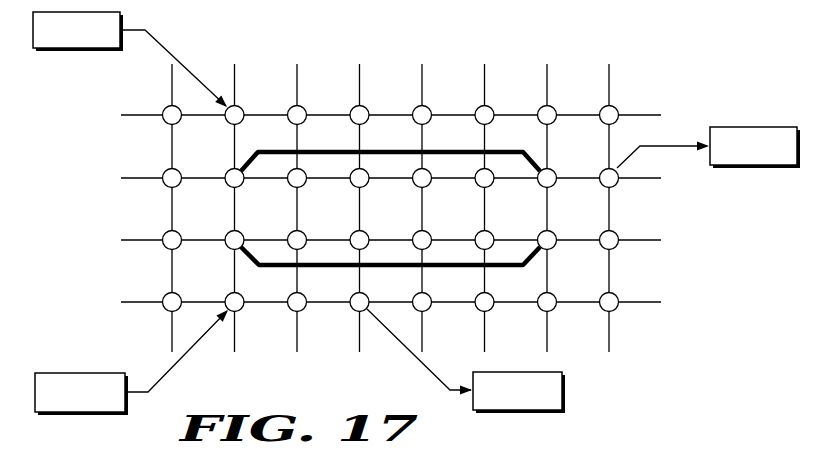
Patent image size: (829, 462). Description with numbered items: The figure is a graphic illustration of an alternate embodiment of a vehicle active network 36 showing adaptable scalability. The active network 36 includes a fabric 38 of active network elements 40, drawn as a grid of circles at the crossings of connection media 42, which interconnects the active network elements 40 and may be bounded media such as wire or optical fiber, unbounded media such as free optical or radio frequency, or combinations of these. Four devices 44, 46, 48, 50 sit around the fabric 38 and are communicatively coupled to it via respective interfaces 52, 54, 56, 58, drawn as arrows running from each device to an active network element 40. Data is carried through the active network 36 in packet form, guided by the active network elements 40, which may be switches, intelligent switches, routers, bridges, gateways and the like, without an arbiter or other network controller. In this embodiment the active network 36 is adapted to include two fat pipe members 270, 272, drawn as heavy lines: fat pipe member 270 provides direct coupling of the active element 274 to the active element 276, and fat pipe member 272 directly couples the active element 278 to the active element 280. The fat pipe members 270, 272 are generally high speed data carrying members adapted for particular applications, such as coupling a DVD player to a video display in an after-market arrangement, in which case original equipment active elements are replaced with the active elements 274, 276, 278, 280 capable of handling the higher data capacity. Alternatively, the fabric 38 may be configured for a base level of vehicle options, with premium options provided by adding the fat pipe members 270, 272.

The active network 36 is at (391, 217).
The fabric 38 is at (493, 60).
The active network element 40 is at (170, 120).
The connection media 42 is at (637, 179).
The device 44 is at (78, 48).
The device 46 is at (81, 373).
The device 48 is at (562, 392).
The device 50 is at (755, 165).
The interface 52 is at (159, 42).
The interface 54 is at (193, 347).
The interface 56 is at (403, 348).
The interface 58 is at (688, 147).
The fat pipe member 270 is at (322, 154).
The fat pipe member 272 is at (463, 263).
The active element 274 is at (228, 186).
The active element 276 is at (552, 186).
The active element 278 is at (228, 248).
The active element 280 is at (553, 248).